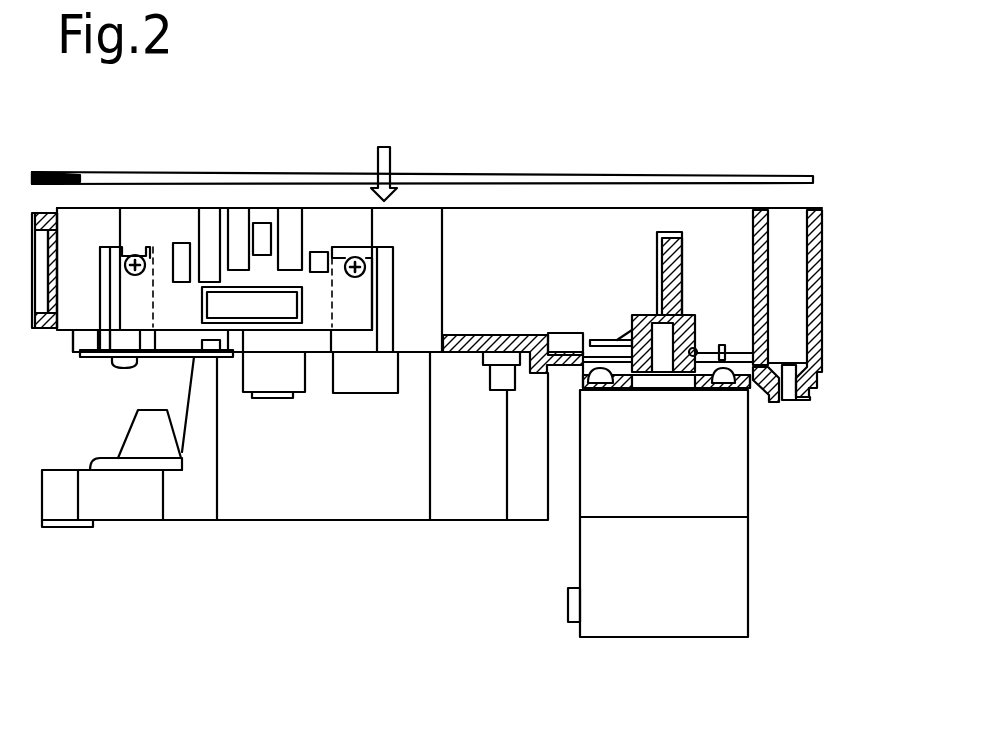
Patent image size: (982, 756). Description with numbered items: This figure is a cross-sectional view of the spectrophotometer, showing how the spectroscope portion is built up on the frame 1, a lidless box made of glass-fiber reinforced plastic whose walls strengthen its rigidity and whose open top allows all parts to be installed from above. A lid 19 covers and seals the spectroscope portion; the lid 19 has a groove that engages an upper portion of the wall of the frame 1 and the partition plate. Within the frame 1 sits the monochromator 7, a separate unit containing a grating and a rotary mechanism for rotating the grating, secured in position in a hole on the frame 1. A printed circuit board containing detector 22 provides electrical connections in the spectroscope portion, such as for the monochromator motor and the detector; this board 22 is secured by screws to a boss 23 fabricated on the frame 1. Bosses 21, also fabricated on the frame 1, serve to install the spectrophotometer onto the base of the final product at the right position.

The frame 1 is at (822, 302).
The monochromator 7 is at (748, 465).
The lid 19 is at (693, 176).
The bosses 21 is at (266, 398).
The printed circuit board containing detector 22 is at (85, 357).
The boss 23 is at (72, 336).